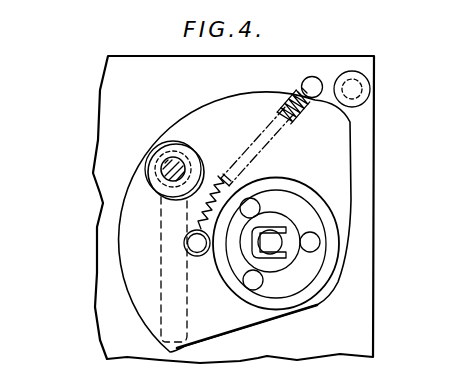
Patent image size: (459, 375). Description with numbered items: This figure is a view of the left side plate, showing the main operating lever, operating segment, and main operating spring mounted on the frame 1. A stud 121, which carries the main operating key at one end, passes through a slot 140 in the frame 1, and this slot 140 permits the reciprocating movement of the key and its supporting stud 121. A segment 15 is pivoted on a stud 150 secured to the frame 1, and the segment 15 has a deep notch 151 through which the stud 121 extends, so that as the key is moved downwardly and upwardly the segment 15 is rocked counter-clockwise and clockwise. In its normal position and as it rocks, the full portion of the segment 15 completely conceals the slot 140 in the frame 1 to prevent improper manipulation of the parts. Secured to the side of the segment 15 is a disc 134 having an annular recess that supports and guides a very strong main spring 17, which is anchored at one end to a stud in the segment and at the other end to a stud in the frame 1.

The frame 1 is at (360, 295).
The segment 15 is at (215, 112).
The main spring 17 is at (262, 143).
The stud 121 is at (166, 163).
The disc 134 is at (271, 283).
The slot 140 is at (160, 219).
The stud 150 is at (271, 239).
The deep notch 151 is at (215, 101).